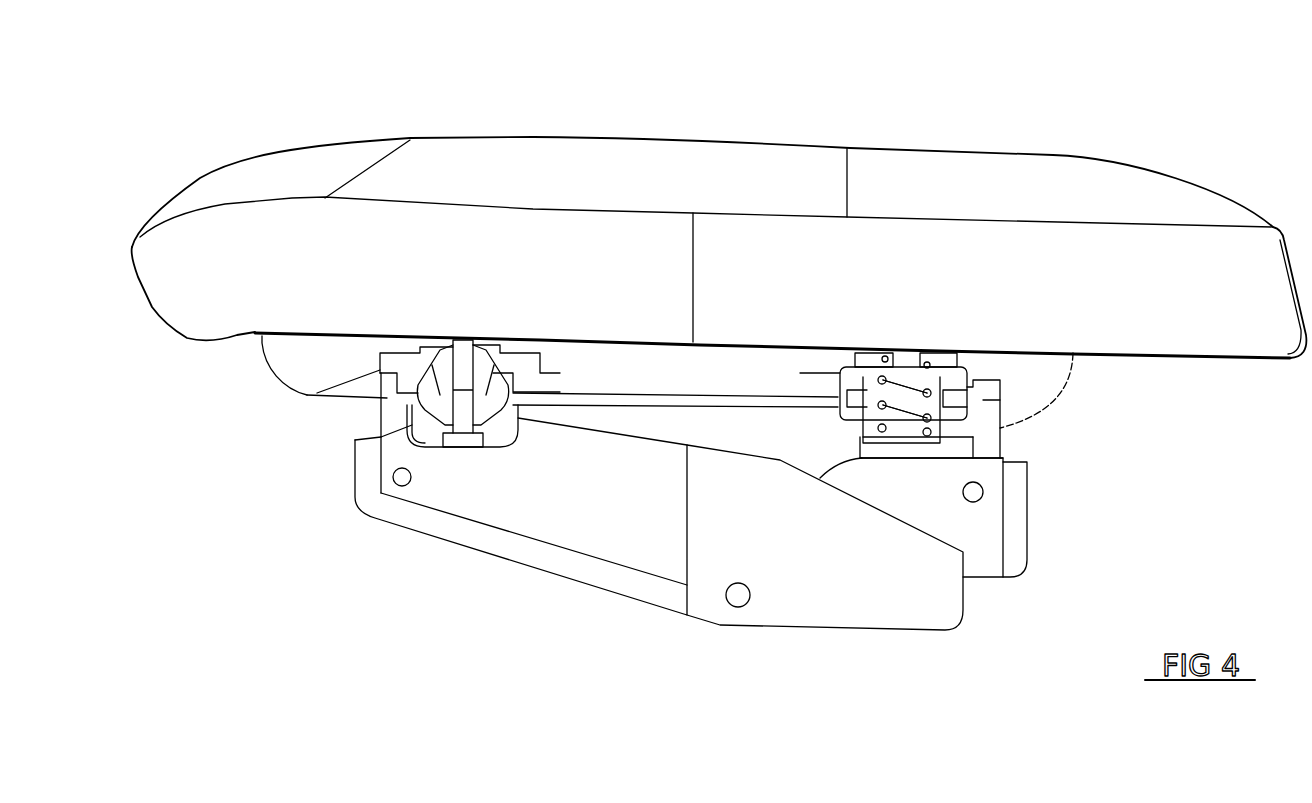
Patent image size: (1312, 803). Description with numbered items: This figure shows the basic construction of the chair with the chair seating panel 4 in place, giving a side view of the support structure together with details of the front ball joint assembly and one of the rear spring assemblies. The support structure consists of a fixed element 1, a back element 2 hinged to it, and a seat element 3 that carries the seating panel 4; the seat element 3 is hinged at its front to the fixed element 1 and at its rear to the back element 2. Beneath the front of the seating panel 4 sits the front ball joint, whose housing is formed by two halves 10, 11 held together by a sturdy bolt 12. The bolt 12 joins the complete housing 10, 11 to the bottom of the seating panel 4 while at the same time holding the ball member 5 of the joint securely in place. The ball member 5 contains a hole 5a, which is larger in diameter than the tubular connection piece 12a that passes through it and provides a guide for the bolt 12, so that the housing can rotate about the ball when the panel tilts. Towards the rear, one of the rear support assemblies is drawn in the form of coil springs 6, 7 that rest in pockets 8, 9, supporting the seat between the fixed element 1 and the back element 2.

The fixed element 1 is at (845, 582).
The back element 2 is at (970, 527).
The seat element 3 is at (983, 434).
The chair seating panel 4 is at (653, 165).
The ball member 5 is at (432, 402).
The hole 5a is at (507, 420).
The coil spring 6 is at (913, 400).
The coil spring 7 is at (1016, 463).
The pocket 8 is at (867, 443).
The pocket 9 is at (864, 582).
The front ball joint housing half 10 is at (470, 453).
The front ball joint housing half 11 is at (407, 362).
The bolt 12 is at (453, 455).
The tubular connection piece 12a is at (500, 424).